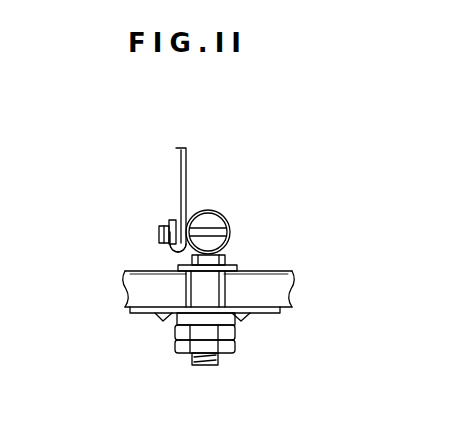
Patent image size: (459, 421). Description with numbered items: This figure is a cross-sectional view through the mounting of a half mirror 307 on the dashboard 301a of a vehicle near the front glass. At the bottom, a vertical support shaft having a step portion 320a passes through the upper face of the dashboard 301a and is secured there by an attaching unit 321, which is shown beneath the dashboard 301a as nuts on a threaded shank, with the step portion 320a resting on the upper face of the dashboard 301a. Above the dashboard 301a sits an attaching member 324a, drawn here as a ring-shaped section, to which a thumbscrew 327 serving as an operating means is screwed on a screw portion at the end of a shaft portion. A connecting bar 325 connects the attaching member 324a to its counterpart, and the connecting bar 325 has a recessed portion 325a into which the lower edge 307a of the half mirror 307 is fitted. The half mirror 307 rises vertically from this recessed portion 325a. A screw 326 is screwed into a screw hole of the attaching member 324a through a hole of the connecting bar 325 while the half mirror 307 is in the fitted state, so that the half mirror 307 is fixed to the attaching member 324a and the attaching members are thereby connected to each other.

The half mirror 307 is at (176, 168).
The lower edge 307a is at (176, 252).
The recessed portion 325a is at (169, 222).
The screw 326 is at (159, 238).
The thumbscrew 327 is at (208, 226).
The attaching member 324a is at (228, 232).
The step portion 320a is at (235, 268).
The dashboard 301a is at (290, 272).
The connecting bar 325 is at (130, 311).
The attaching unit 321 is at (235, 333).